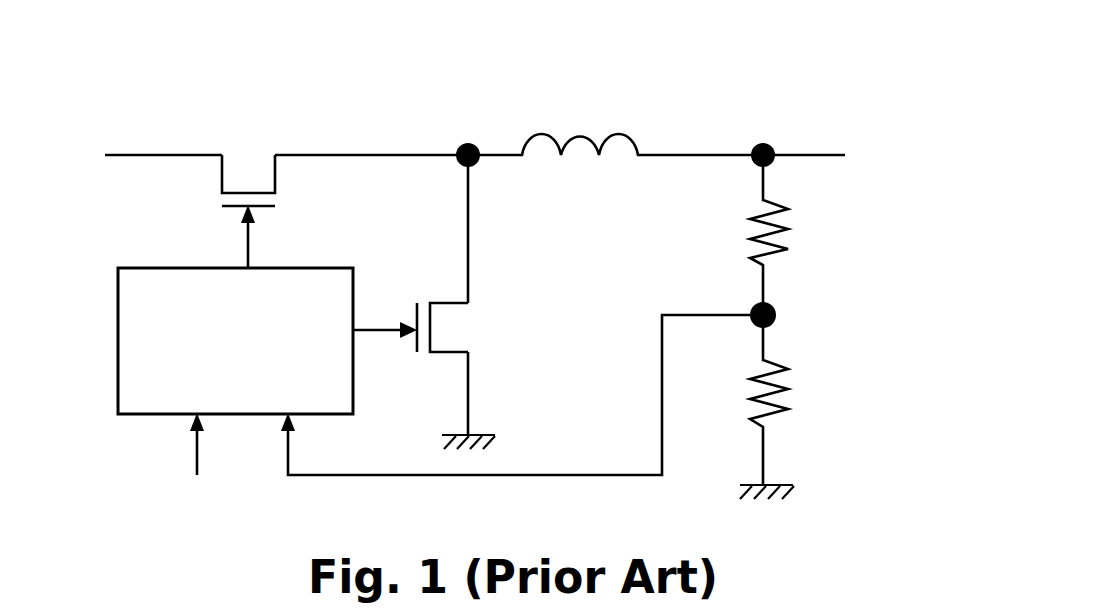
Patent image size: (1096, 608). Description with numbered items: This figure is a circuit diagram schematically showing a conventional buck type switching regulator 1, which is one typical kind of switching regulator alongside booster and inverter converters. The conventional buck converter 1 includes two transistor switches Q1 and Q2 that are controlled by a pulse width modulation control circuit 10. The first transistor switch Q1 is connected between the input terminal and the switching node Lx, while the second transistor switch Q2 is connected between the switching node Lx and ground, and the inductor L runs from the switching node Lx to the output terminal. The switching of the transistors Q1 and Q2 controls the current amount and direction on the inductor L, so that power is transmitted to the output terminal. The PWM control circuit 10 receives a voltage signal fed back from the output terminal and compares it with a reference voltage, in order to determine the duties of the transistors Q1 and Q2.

The conventional buck converter 1 is at (740, 104).
The pulse width modulation control circuit 10 is at (216, 382).
The transistor switch Q1 is at (247, 192).
The transistor switch Q2 is at (434, 327).
The inductor L is at (615, 112).
The switching node Lx is at (475, 136).